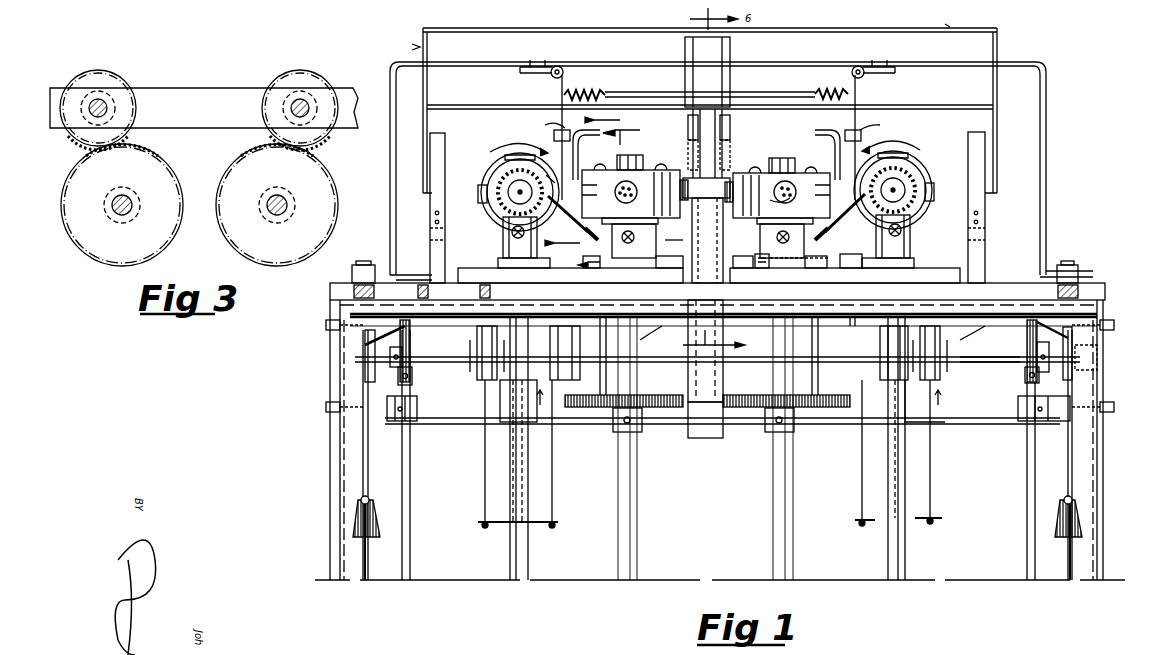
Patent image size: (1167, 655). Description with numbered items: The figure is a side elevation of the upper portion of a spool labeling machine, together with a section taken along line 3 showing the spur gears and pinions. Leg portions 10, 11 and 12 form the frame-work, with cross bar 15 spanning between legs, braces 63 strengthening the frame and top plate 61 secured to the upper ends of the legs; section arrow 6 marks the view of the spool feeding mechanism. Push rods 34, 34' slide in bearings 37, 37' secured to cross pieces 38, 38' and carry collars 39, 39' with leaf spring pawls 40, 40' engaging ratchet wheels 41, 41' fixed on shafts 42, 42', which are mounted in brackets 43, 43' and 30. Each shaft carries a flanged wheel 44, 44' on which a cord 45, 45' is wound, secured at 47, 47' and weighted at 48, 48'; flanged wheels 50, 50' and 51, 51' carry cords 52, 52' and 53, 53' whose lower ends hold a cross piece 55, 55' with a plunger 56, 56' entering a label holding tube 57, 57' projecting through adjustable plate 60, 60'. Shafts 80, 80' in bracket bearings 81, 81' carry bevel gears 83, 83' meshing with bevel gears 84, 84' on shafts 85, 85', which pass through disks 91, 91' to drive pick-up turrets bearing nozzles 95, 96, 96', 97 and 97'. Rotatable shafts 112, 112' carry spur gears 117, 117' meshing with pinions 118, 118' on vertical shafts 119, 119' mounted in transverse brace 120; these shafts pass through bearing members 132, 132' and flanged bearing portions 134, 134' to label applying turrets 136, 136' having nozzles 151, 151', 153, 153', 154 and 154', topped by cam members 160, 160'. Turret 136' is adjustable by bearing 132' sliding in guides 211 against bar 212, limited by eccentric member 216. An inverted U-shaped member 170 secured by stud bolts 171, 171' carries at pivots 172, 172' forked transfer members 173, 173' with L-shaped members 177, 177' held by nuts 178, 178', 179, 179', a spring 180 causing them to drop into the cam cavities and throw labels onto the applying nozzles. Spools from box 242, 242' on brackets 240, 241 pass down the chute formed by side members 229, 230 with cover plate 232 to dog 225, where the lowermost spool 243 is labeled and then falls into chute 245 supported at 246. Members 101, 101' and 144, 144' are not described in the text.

In FIG. 1, the section line 3 is at (739, 405).
In FIG. 1, the section arrow 6 is at (719, 341).
In FIG. 1, the leg portion 10 is at (328, 458).
In FIG. 1, the leg portion 11 is at (617, 196).
In FIG. 1, the leg portion 12 is at (1100, 470).
In FIG. 1, the cross bar 15 is at (582, 178).
In FIG. 1, the bracket 30 is at (845, 326).
In FIG. 1, the push rod 34 is at (411, 455).
In FIG. 1, the push rod 34' is at (1016, 481).
In FIG. 1, the bearing portion 37 is at (415, 408).
In FIG. 1, the bearing portion 37' is at (1030, 407).
In FIG. 1, the cross piece 38 is at (377, 455).
In FIG. 1, the cross piece 38' is at (1061, 455).
In FIG. 1, the collar 39 is at (414, 376).
In FIG. 1, the collar 39' is at (1019, 376).
In FIG. 1, the leaf spring pawl 40 is at (412, 351).
In FIG. 1, the leaf spring pawl 40' is at (1048, 344).
In FIG. 1, the ratchet wheel 41 is at (418, 347).
In FIG. 1, the ratchet wheel 41' is at (1018, 351).
In FIG. 1, the shaft 42 is at (717, 349).
In FIG. 1, the shaft 42' is at (990, 368).
In FIG. 1, the bracket 43 is at (334, 366).
In FIG. 1, the bracket 43' is at (1102, 366).
In FIG. 1, the flanged wheel 44 is at (385, 330).
In FIG. 1, the flanged wheel 44' is at (1081, 351).
In FIG. 1, the cord 45 is at (378, 524).
In FIG. 1, the cord 45' is at (1055, 512).
In FIG. 1, the cord securing point 47 is at (375, 360).
In FIG. 1, the cord securing point 47' is at (1058, 358).
In FIG. 1, the weight 48 is at (375, 512).
In FIG. 1, the weight 48' is at (1061, 516).
In FIG. 1, the flanged wheel 50 is at (487, 356).
In FIG. 1, the flanged wheel 50' is at (938, 355).
In FIG. 1, the flanged wheel 51 is at (565, 353).
In FIG. 1, the flanged wheel 51' is at (894, 353).
In FIG. 1, the cord 52 is at (470, 451).
In FIG. 1, the cord 52' is at (943, 449).
In FIG. 1, the cord 53 is at (542, 451).
In FIG. 1, the cord 53' is at (851, 450).
In FIG. 1, the cross piece 55 is at (518, 532).
In FIG. 1, the cross piece 55' is at (898, 528).
In FIG. 1, the plunger 56 is at (507, 451).
In FIG. 1, the plunger 56' is at (910, 449).
In FIG. 1, the tube 57 is at (512, 401).
In FIG. 1, the tube 57' is at (931, 401).
In FIG. 1, the adjustable plate 60 is at (570, 270).
In FIG. 1, the adjustable plate 60' is at (845, 279).
In FIG. 1, the top plate 61 is at (340, 293).
In FIG. 1, the brace 63 is at (812, 333).
In FIG. 1, the shaft 80 is at (508, 448).
In FIG. 1, the shaft 80' is at (912, 448).
In FIG. 1, the bracket bearing 81 is at (511, 237).
In FIG. 1, the bracket bearing 81' is at (908, 236).
In FIG. 1, the bevel gear 83 is at (493, 221).
In FIG. 1, the bevel gear 83' is at (923, 228).
In FIG. 1, the bevel gear 84 is at (520, 188).
In FIG. 1, the bevel gear 84' is at (913, 192).
In FIG. 1, the shaft 85 is at (504, 192).
In FIG. 1, the shaft 85' is at (893, 190).
In FIG. 1, the disk 91 is at (501, 159).
In FIG. 1, the disk 91' is at (920, 160).
In FIG. 1, the nozzle 95 is at (546, 168).
In FIG. 1, the nozzle 96 is at (516, 146).
In FIG. 1, the nozzle 96' is at (897, 143).
In FIG. 1, the nozzle 97 is at (473, 186).
In FIG. 1, the nozzle 97' is at (948, 182).
In FIG. 1, the link 101 is at (571, 218).
In FIG. 1, the link 101' is at (846, 217).
In FIG. 3, the rotatable shaft 112 is at (135, 205).
In FIG. 1, the rotatable shaft 112 is at (641, 448).
In FIG. 3, the rotatable shaft 112' is at (290, 205).
In FIG. 1, the rotatable shaft 112' is at (768, 448).
In FIG. 3, the spur gear 117 is at (127, 205).
In FIG. 1, the spur gear 117 is at (624, 388).
In FIG. 1, the spur gear 117' is at (786, 388).
In FIG. 3, the pinion 118 is at (122, 106).
In FIG. 3, the pinion 118' is at (316, 146).
In FIG. 3, the vertically disposed shaft 119 is at (98, 99).
In FIG. 1, the vertically disposed shaft 119 is at (623, 356).
In FIG. 3, the vertically disposed shaft 119' is at (310, 104).
In FIG. 1, the vertically disposed shaft 119' is at (830, 356).
In FIG. 3, the transverse brace 120 is at (188, 96).
In FIG. 1, the transverse brace 120 is at (430, 428).
In FIG. 1, the bearing member 132 is at (633, 256).
In FIG. 1, the bearing 132' is at (780, 261).
In FIG. 1, the flanged bearing portion 134 is at (628, 220).
In FIG. 1, the flanged bearing portion 134' is at (784, 226).
In FIG. 1, the label applying turret 136 is at (634, 176).
In FIG. 1, the label applying turret 136' is at (758, 181).
In FIG. 1, the support 144 is at (634, 235).
In FIG. 1, the support 144' is at (782, 235).
In FIG. 1, the nozzle 151 is at (631, 194).
In FIG. 1, the nozzle 151' is at (779, 174).
In FIG. 1, the nozzle 153 is at (596, 197).
In FIG. 1, the nozzle 153' is at (819, 171).
In FIG. 1, the nozzle 154 is at (614, 192).
In FIG. 1, the nozzle 154' is at (772, 188).
In FIG. 1, the cam member 160 is at (671, 172).
In FIG. 1, the cam member 160' is at (744, 172).
In FIG. 1, the inverted U-shaped member 170 is at (390, 185).
In FIG. 1, the stud bolt 171 is at (364, 261).
In FIG. 1, the stud bolt 171' is at (1078, 260).
In FIG. 1, the pivot 172 is at (570, 120).
In FIG. 1, the pivot 172' is at (868, 119).
In FIG. 1, the transfer member 173 is at (557, 71).
In FIG. 1, the transfer member 173' is at (876, 77).
In FIG. 1, the L-shaped member 177 is at (592, 155).
In FIG. 1, the L-shaped member 177' is at (824, 155).
In FIG. 1, the nut 178 is at (575, 132).
In FIG. 1, the nut 178' is at (836, 129).
In FIG. 1, the nut 179 is at (545, 122).
In FIG. 1, the nut 179' is at (875, 121).
In FIG. 1, the spring 180 is at (832, 88).
In FIG. 1, the guide 211 is at (800, 250).
In FIG. 1, the bar 212 is at (857, 254).
In FIG. 1, the adjustable eccentric member 216 is at (764, 261).
In FIG. 1, the dog 225 is at (670, 230).
In FIG. 1, the side member 229 is at (728, 126).
In FIG. 1, the side member 230 is at (687, 125).
In FIG. 1, the cover plate 232 is at (712, 74).
In FIG. 1, the bracket 240 is at (432, 235).
In FIG. 1, the bracket 241 is at (984, 238).
In FIG. 1, the box 242 is at (401, 42).
In FIG. 1, the box 242' is at (964, 18).
In FIG. 1, the lowermost spool 243 is at (774, 195).
In FIG. 1, the chute 245 is at (708, 366).
In FIG. 1, the chute support 246 is at (706, 230).